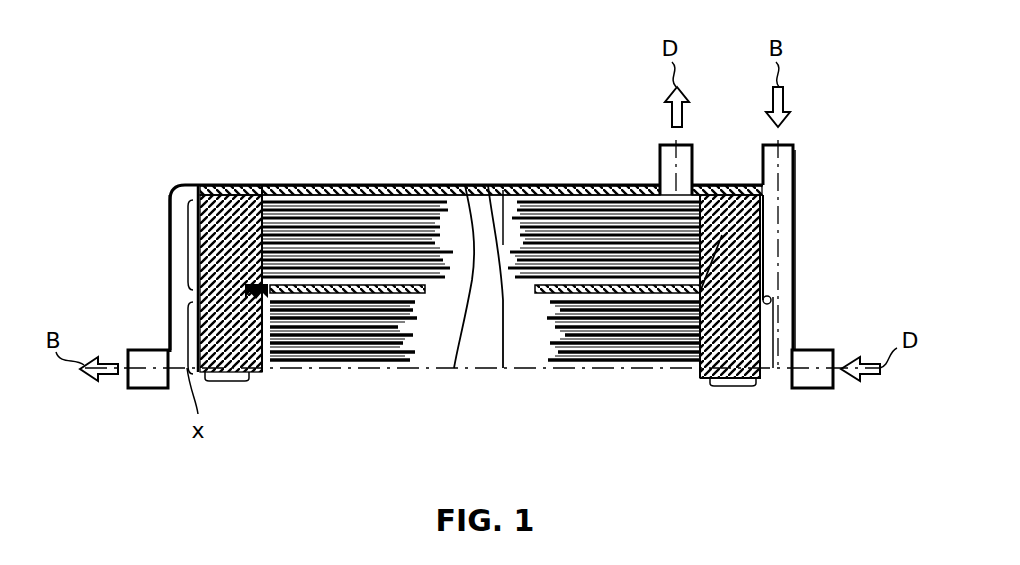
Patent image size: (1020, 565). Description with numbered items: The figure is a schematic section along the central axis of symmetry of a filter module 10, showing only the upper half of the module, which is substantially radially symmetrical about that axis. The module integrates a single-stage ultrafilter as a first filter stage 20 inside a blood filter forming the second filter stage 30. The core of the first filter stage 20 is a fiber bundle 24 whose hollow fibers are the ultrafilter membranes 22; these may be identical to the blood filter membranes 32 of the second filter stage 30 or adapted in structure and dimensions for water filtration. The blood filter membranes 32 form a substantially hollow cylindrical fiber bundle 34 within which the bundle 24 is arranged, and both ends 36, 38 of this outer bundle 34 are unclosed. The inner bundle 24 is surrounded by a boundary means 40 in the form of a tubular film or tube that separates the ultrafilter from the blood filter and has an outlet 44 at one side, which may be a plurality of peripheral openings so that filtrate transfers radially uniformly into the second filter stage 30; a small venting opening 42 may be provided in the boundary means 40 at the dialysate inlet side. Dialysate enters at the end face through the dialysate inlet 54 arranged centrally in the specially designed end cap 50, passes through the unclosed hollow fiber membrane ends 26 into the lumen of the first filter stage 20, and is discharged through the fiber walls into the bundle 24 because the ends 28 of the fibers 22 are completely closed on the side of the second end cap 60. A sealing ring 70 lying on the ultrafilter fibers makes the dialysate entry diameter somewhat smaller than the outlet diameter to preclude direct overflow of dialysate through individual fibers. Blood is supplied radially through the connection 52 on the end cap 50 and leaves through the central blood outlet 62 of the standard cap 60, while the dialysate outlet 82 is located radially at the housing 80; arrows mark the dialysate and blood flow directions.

The filter module 10 is at (150, 92).
The first filter stage 20 is at (543, 333).
The ultrafilter membranes 22 is at (344, 348).
The fiber bundle 24 is at (423, 300).
The unclosed hollow fiber membrane ends 26 is at (770, 334).
The closed ends of the hollow fibers 28 is at (192, 332).
The second filter stage 30 is at (508, 245).
The blood filter membranes 32 is at (300, 226).
The hollow cylindrical fiber bundle 34 is at (490, 240).
The end of the fiber bundle 36 is at (770, 240).
The end of the fiber bundle 38 is at (182, 243).
The boundary means 40 is at (540, 292).
The venting opening 42 is at (700, 292).
The outlet 44 is at (262, 296).
The end cap 50 is at (796, 198).
The blood connection 52 is at (783, 140).
The dialysate inlet 54 is at (812, 390).
The second end cap 60 is at (168, 296).
The blood outlet 62 is at (150, 350).
The sealing ring 70 is at (770, 296).
The housing 80 is at (345, 188).
The dialysate outlet 82 is at (660, 163).